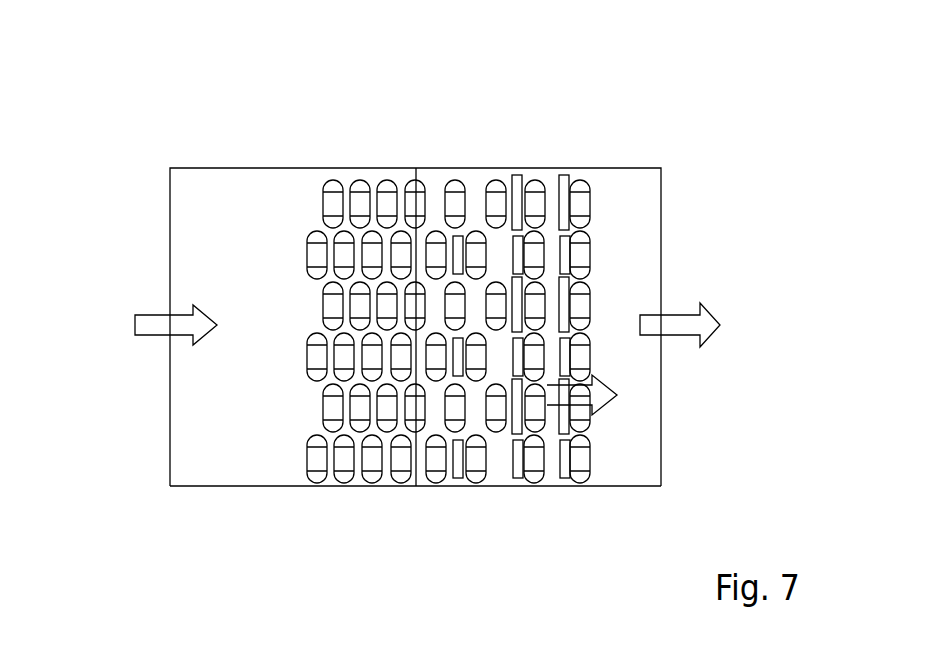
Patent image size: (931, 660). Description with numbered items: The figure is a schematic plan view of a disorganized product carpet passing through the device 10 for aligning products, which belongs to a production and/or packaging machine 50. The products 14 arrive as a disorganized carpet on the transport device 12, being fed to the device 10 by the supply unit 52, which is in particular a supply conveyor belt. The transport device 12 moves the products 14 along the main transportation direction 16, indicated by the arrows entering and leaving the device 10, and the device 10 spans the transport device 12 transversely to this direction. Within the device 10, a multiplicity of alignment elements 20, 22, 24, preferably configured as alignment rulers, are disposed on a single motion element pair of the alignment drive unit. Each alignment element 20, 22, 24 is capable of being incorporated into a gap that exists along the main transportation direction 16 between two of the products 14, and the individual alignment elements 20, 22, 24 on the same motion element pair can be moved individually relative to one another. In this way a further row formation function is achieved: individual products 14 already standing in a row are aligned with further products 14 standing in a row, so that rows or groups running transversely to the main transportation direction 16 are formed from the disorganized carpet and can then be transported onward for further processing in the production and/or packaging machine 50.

The device for aligning products 10 is at (603, 156).
The transport device 12 is at (148, 472).
The products 14 is at (322, 457).
The main transportation direction 16 is at (153, 313).
The alignment element 20 is at (456, 446).
The alignment element 22 is at (511, 433).
The alignment element 24 is at (510, 476).
The production and/or packaging machine 50 is at (739, 144).
The supply unit 52 is at (197, 487).